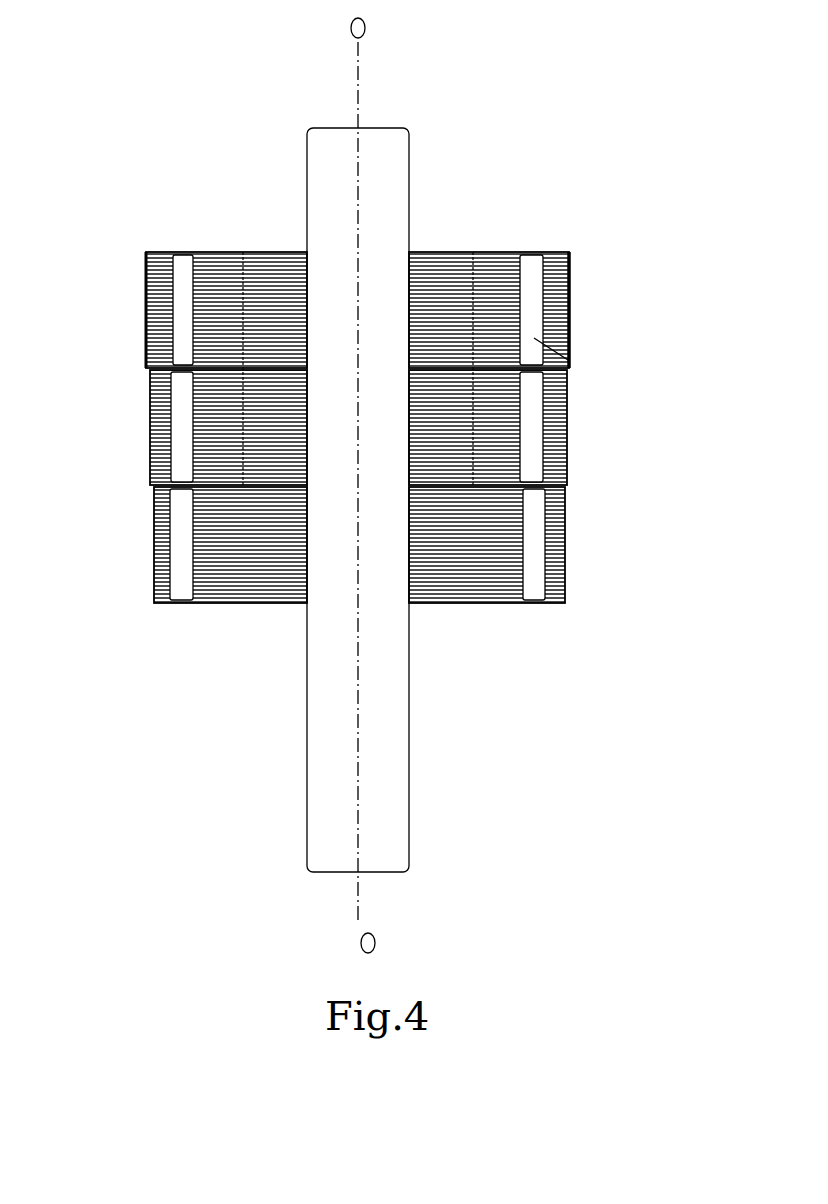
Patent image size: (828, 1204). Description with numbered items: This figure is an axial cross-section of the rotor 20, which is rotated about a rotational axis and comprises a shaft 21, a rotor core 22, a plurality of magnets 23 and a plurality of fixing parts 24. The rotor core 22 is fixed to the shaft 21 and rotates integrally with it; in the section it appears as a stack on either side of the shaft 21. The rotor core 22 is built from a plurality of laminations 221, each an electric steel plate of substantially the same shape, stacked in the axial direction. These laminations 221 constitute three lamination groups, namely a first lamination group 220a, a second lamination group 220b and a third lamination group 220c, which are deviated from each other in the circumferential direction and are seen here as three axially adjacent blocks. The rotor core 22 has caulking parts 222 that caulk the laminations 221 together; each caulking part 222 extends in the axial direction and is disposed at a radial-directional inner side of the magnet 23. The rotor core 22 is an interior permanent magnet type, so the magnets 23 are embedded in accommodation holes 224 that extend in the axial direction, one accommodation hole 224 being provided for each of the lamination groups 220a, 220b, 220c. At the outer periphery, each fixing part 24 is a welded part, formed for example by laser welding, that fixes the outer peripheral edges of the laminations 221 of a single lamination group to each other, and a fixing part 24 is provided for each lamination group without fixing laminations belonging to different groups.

The rotor 20 is at (608, 243).
The shaft 21 is at (393, 785).
The rotor core 22 is at (257, 247).
The first lamination group 220a is at (137, 253).
The second lamination group 220b is at (137, 371).
The third lamination group 220c is at (137, 489).
The lamination 221 is at (507, 252).
The caulking part 222 is at (474, 252).
The accommodation hole 224 is at (535, 252).
The magnet 23 is at (568, 360).
The fixing part 24 is at (570, 280).